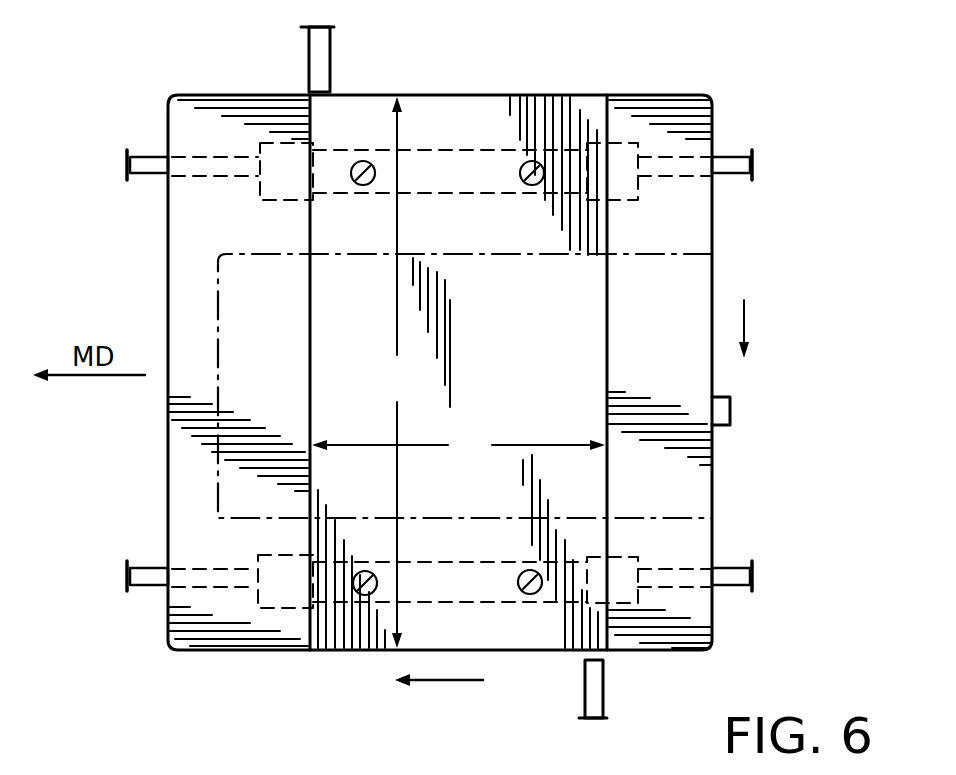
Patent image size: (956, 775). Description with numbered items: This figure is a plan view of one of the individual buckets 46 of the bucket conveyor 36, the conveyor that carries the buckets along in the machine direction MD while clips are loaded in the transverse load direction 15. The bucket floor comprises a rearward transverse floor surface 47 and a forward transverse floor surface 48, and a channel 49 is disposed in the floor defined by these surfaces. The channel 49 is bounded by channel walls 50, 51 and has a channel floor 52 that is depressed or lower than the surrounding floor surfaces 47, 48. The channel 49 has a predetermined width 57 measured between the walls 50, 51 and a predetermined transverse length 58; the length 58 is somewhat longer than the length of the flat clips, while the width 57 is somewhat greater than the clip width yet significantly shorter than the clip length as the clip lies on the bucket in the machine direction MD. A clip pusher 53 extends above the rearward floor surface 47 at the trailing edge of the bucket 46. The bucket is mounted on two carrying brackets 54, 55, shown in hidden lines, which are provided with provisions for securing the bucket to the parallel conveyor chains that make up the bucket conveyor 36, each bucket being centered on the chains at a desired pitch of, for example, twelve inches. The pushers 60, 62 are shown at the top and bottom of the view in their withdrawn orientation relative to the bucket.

The load direction 15 is at (744, 322).
The bucket conveyor 36 is at (148, 178).
The bucket 46 is at (790, 290).
The rearward transverse floor surface 47 is at (680, 346).
The forward transverse floor surface 48 is at (276, 357).
The channel 49 is at (433, 118).
The channel wall 50 is at (605, 330).
The channel wall 51 is at (312, 327).
The channel floor 52 is at (503, 384).
The clip pusher 53 is at (730, 425).
The carrying bracket 54 is at (417, 208).
The carrying bracket 55 is at (420, 558).
The width 57 is at (458, 447).
The transverse length 58 is at (392, 372).
The pusher 60 is at (331, 52).
The pusher 62 is at (604, 688).